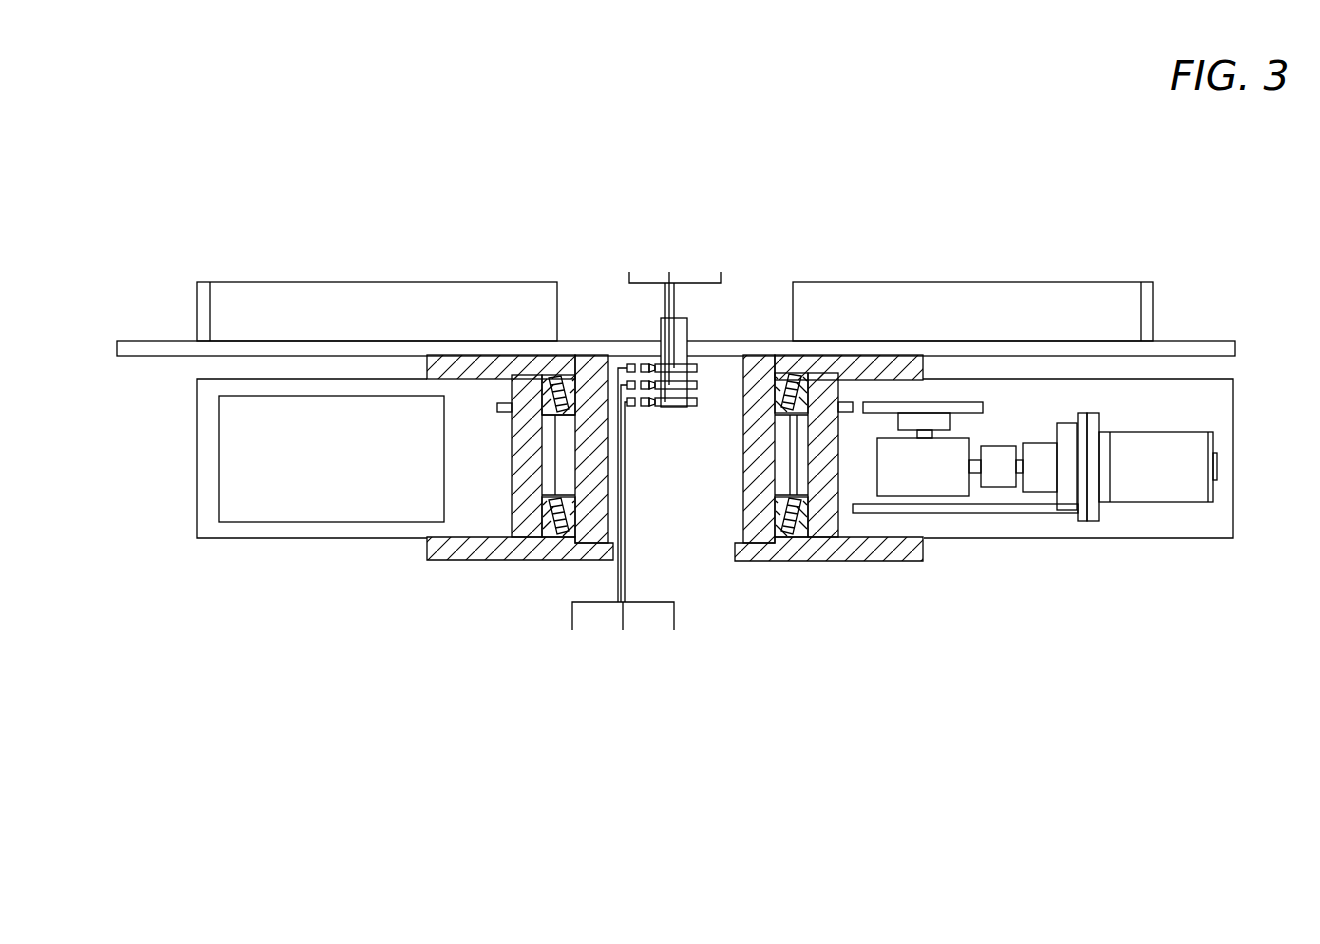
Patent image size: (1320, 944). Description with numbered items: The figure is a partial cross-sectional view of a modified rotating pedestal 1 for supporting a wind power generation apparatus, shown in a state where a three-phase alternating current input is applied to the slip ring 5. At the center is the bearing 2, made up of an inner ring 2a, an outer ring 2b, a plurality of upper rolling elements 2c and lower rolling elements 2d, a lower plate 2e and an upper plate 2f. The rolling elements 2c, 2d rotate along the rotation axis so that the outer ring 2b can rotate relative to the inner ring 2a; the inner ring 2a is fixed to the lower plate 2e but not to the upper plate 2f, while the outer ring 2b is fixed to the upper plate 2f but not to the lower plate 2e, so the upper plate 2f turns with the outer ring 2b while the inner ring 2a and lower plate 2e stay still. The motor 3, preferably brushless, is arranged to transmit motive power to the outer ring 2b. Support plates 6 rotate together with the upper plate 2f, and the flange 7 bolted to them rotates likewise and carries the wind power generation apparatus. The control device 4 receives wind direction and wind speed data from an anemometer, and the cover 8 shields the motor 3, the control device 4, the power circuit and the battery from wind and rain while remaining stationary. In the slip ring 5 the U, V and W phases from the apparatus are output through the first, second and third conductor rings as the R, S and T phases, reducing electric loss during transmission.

The rotating pedestal 1 is at (780, 666).
The bearing 2 is at (466, 560).
The inner ring 2a is at (752, 492).
The outer ring 2b is at (822, 525).
The upper rolling elements 2c is at (770, 385).
The lower rolling elements 2d is at (797, 540).
The lower plate 2e is at (880, 545).
The upper plate 2f is at (862, 360).
The motor 3 is at (945, 485).
The control device 4 is at (288, 499).
The slip ring 5 is at (634, 362).
The support plates 6 is at (147, 342).
The flange 7 is at (353, 290).
The cover 8 is at (197, 396).